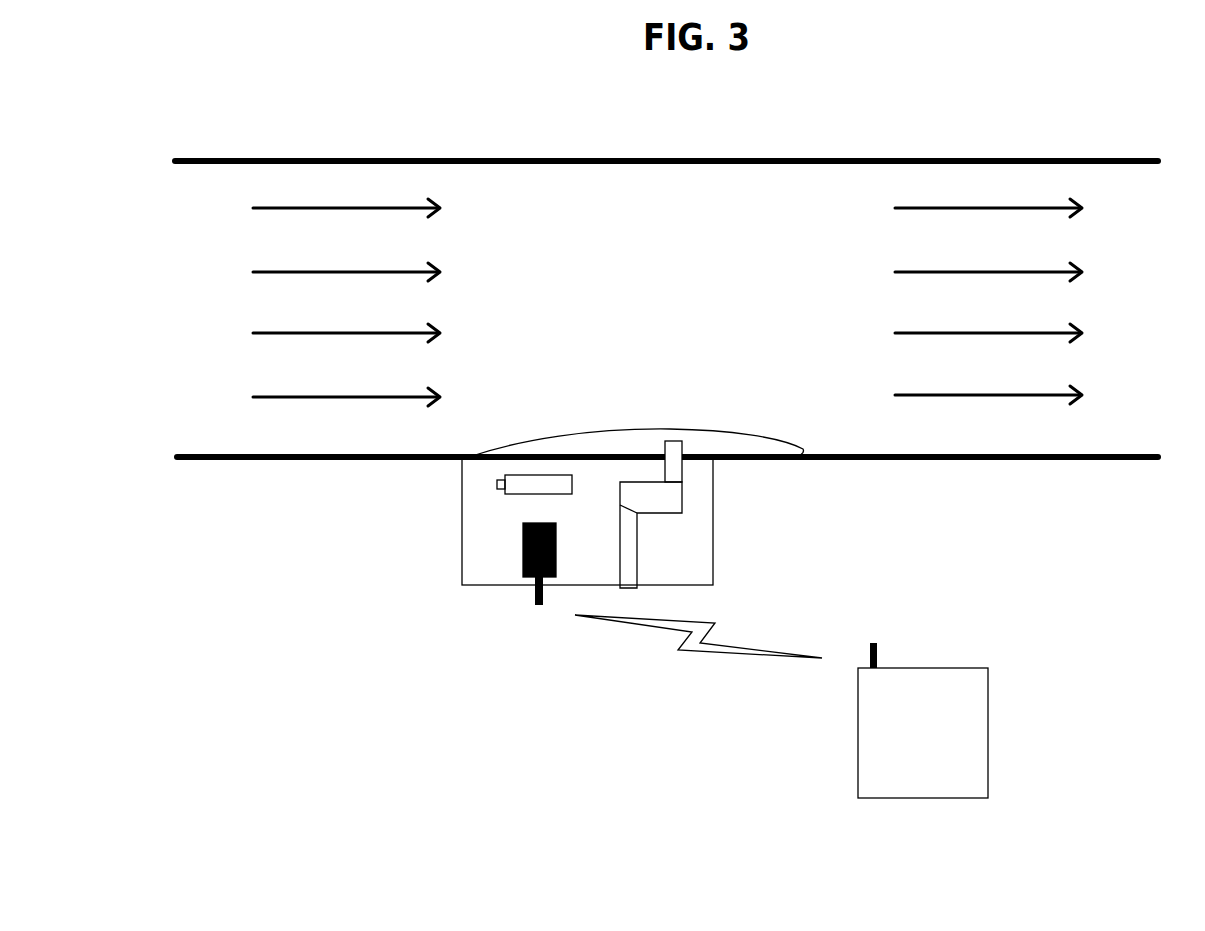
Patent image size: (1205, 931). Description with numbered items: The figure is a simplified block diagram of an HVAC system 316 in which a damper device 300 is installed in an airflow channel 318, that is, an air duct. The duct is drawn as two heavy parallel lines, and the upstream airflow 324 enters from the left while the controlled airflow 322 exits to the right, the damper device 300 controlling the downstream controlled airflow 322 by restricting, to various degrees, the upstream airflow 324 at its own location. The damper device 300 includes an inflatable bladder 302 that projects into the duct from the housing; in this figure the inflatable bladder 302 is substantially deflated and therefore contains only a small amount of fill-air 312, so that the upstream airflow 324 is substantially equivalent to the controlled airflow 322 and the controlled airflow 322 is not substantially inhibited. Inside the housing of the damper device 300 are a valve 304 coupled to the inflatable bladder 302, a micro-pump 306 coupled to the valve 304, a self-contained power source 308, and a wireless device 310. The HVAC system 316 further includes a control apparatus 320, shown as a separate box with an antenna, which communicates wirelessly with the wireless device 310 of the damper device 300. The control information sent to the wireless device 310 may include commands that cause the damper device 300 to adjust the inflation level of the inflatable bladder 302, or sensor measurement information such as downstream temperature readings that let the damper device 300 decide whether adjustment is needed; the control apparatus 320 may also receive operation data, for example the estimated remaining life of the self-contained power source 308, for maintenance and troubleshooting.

The damper device 300 is at (448, 488).
The inflatable bladder 302 is at (754, 415).
The valve 304 is at (697, 485).
The micro-pump 306 is at (694, 504).
The self-contained power source 308 is at (524, 505).
The wireless device 310 is at (529, 589).
The fill-air 312 is at (706, 370).
The HVAC system 316 is at (283, 773).
The airflow channel 318 is at (277, 470).
The control apparatus 320 is at (857, 813).
The controlled airflow 322 is at (1020, 341).
The upstream airflow 324 is at (322, 339).